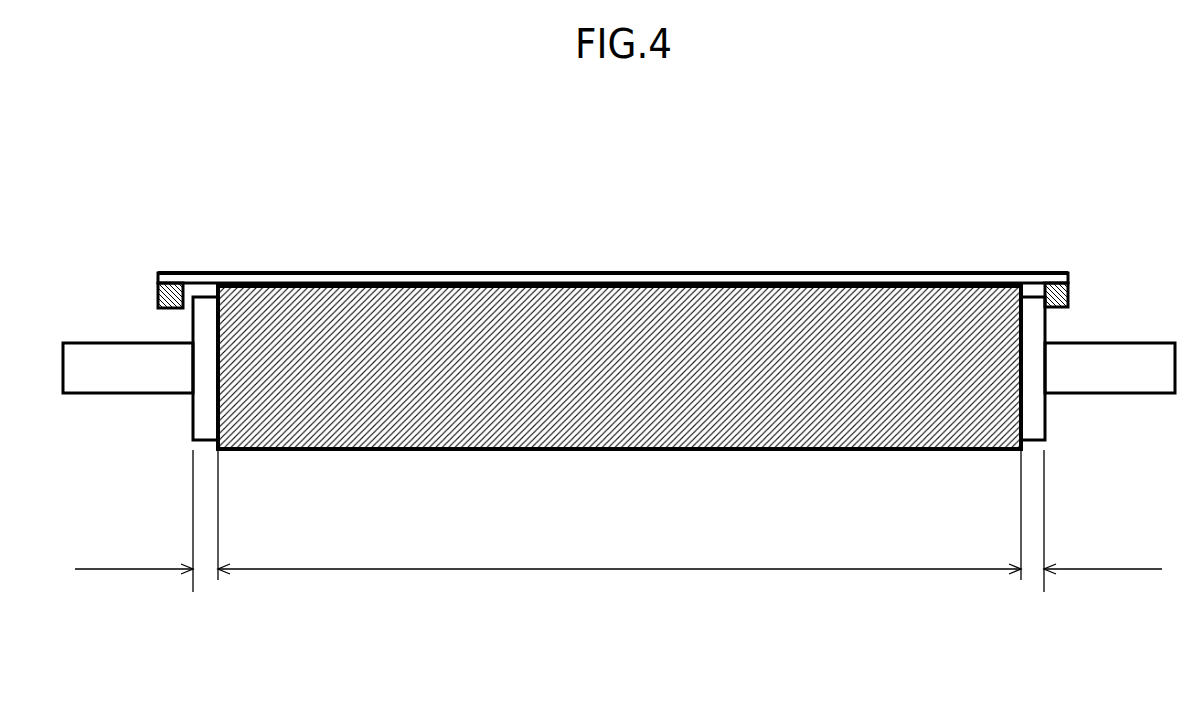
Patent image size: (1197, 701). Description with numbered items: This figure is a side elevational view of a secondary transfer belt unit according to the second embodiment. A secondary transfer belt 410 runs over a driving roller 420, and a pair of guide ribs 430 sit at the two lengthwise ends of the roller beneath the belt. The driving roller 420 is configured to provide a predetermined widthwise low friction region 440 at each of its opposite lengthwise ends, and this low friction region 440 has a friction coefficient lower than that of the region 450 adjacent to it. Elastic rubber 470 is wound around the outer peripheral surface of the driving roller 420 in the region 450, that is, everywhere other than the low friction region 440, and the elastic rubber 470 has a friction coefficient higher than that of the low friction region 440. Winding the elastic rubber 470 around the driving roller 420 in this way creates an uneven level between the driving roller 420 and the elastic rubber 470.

The secondary transfer belt 410 is at (610, 280).
The driving roller 420 is at (1035, 422).
The guide ribs 430 is at (158, 293).
The low friction region 440 is at (145, 570).
The region adjacent to the low friction region 450 is at (617, 570).
The elastic rubber 470 is at (603, 432).